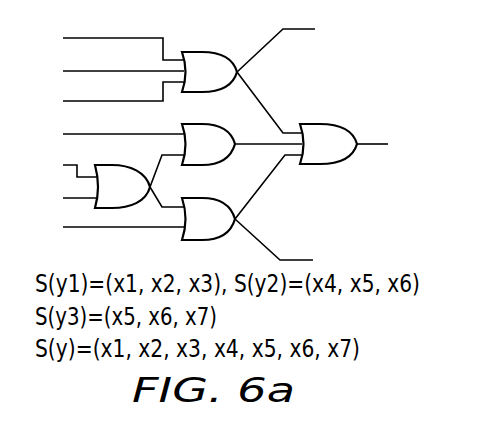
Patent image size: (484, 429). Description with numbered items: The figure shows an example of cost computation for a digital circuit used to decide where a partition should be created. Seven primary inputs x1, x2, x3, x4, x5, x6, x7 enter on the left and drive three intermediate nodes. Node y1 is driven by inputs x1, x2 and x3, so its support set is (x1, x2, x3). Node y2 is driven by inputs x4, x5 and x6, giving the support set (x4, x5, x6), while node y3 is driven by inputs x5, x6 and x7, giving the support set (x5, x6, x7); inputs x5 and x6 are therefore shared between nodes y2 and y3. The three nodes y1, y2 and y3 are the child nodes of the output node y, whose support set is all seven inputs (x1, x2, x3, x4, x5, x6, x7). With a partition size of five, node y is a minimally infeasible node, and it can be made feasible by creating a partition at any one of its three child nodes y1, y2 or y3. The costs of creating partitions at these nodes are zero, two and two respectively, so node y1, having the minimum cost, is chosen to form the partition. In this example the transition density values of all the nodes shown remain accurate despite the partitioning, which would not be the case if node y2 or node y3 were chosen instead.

The input x1 is at (112, 44).
The input x2 is at (112, 70).
The input x3 is at (112, 96).
The input x4 is at (112, 134).
The input x5 is at (69, 166).
The input x6 is at (69, 198).
The input x7 is at (112, 227).
The node y1 is at (248, 81).
The node y2 is at (242, 143).
The node y3 is at (247, 207).
The node y is at (344, 140).